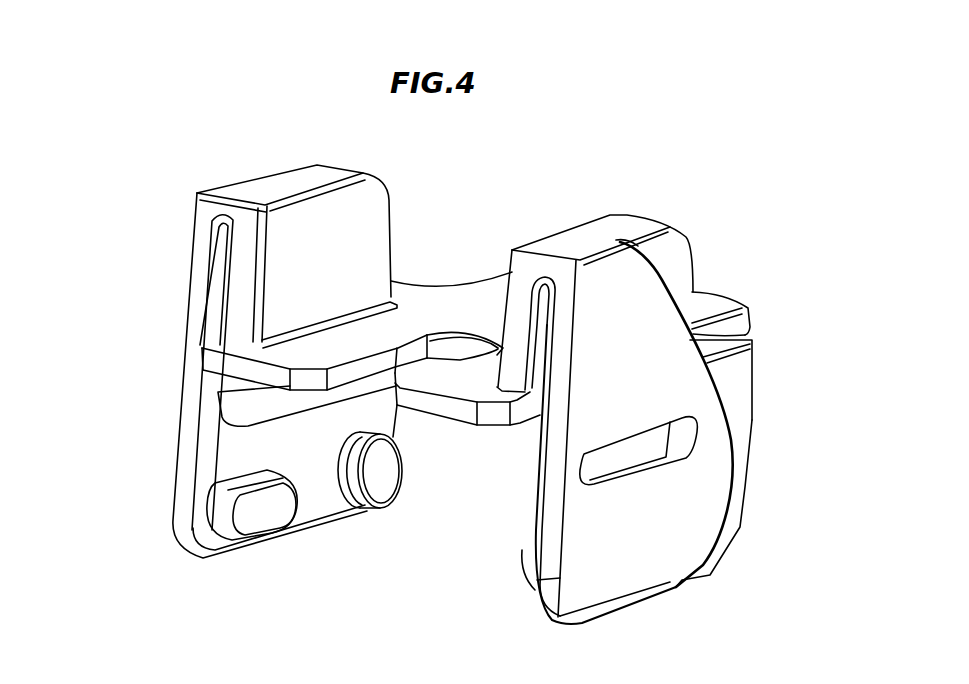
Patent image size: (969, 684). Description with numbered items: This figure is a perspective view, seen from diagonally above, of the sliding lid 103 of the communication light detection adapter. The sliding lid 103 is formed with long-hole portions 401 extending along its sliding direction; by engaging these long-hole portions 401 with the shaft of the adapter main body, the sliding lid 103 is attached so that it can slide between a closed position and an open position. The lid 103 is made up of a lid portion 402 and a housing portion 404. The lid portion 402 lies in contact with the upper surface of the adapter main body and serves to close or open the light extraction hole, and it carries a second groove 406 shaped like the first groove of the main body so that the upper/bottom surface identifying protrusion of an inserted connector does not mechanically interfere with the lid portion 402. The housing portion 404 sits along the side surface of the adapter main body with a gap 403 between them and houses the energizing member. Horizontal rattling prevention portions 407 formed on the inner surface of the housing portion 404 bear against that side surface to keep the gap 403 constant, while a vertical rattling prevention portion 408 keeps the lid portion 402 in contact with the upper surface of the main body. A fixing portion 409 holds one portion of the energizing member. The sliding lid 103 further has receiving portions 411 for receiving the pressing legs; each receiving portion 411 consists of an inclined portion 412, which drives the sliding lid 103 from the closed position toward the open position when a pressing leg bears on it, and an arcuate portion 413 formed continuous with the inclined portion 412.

The sliding lid 103 is at (164, 211).
The long-hole portions 401 is at (683, 437).
The lid portion 402 is at (717, 303).
The gap 403 is at (220, 305).
The housing portion 404 is at (630, 592).
The second groove 406 is at (457, 347).
The horizontal rattling prevention portions 407 is at (260, 518).
The vertical rattling prevention portion 408 is at (270, 350).
The fixing portion 409 is at (392, 477).
The receiving portions 411 is at (717, 493).
The inclined portion 412 is at (717, 370).
The arcuate portion 413 is at (727, 507).